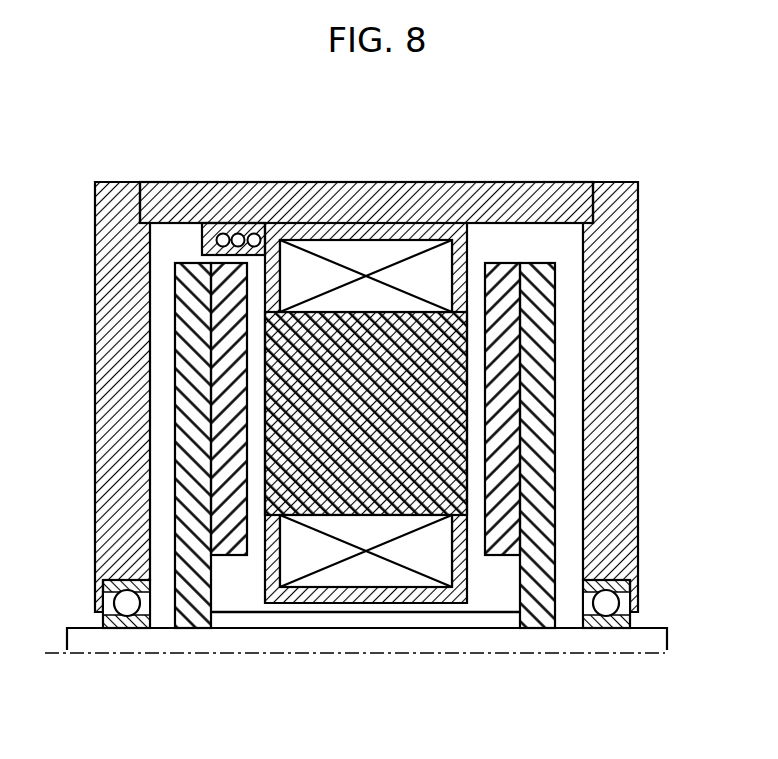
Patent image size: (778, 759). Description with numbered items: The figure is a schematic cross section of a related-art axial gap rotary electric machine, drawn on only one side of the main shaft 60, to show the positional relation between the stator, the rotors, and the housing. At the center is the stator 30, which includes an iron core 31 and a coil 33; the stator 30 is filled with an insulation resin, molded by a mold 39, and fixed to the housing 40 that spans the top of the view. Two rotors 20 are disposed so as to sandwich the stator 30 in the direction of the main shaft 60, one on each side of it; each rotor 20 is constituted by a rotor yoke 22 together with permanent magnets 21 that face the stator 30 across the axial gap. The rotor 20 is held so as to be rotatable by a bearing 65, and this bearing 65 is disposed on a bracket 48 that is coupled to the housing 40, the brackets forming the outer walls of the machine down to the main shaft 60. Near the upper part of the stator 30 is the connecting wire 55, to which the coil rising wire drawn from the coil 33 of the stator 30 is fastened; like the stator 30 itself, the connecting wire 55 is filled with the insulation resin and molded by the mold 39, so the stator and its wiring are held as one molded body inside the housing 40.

The rotor 20 is at (357, 355).
The permanent magnets 21 is at (500, 262).
The rotor yoke 22 is at (540, 262).
The stator 30 is at (359, 397).
The iron core 31 is at (312, 318).
The coil 33 is at (358, 253).
The mold 39 is at (186, 255).
The housing 40 is at (387, 182).
The bracket 48 is at (115, 182).
The connecting wire 55 is at (222, 217).
The main shaft 60 is at (82, 640).
The bearing 65 is at (125, 630).